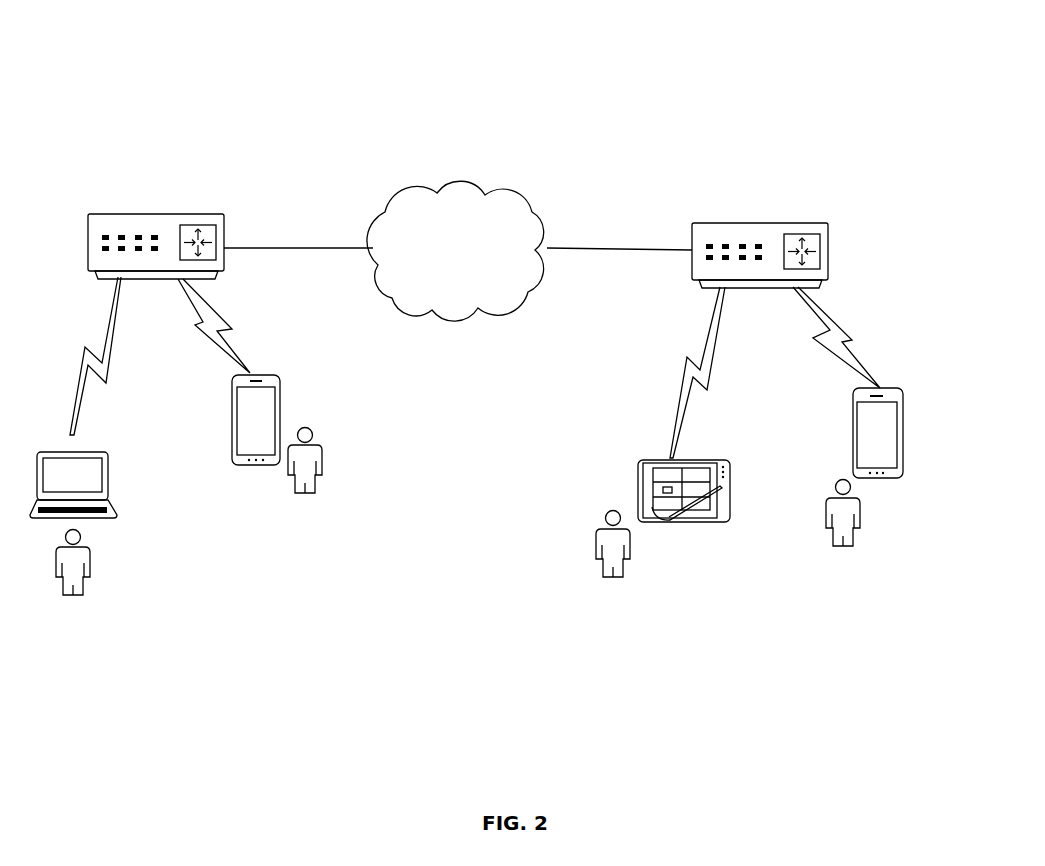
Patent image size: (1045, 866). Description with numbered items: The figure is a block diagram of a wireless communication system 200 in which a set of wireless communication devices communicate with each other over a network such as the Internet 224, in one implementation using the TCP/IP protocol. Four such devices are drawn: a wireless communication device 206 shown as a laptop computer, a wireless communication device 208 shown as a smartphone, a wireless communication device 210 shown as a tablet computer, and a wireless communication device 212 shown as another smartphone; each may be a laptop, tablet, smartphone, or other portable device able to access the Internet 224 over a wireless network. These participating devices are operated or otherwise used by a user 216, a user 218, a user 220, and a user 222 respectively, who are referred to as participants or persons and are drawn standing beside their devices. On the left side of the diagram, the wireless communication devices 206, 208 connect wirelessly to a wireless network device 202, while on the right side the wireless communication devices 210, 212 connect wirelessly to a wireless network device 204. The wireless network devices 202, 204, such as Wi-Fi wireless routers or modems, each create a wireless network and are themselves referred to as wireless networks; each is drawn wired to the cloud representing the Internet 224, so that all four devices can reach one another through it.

The wireless communication system 200 is at (673, 48).
The wireless network device 202 is at (174, 214).
The wireless network device 204 is at (768, 223).
The wireless communication device 206 is at (113, 505).
The wireless communication device 208 is at (237, 408).
The wireless communication device 210 is at (638, 478).
The wireless communication device 212 is at (882, 478).
The user 216 is at (90, 562).
The user 218 is at (323, 460).
The user 220 is at (630, 545).
The user 222 is at (855, 535).
The Internet 224 is at (380, 213).